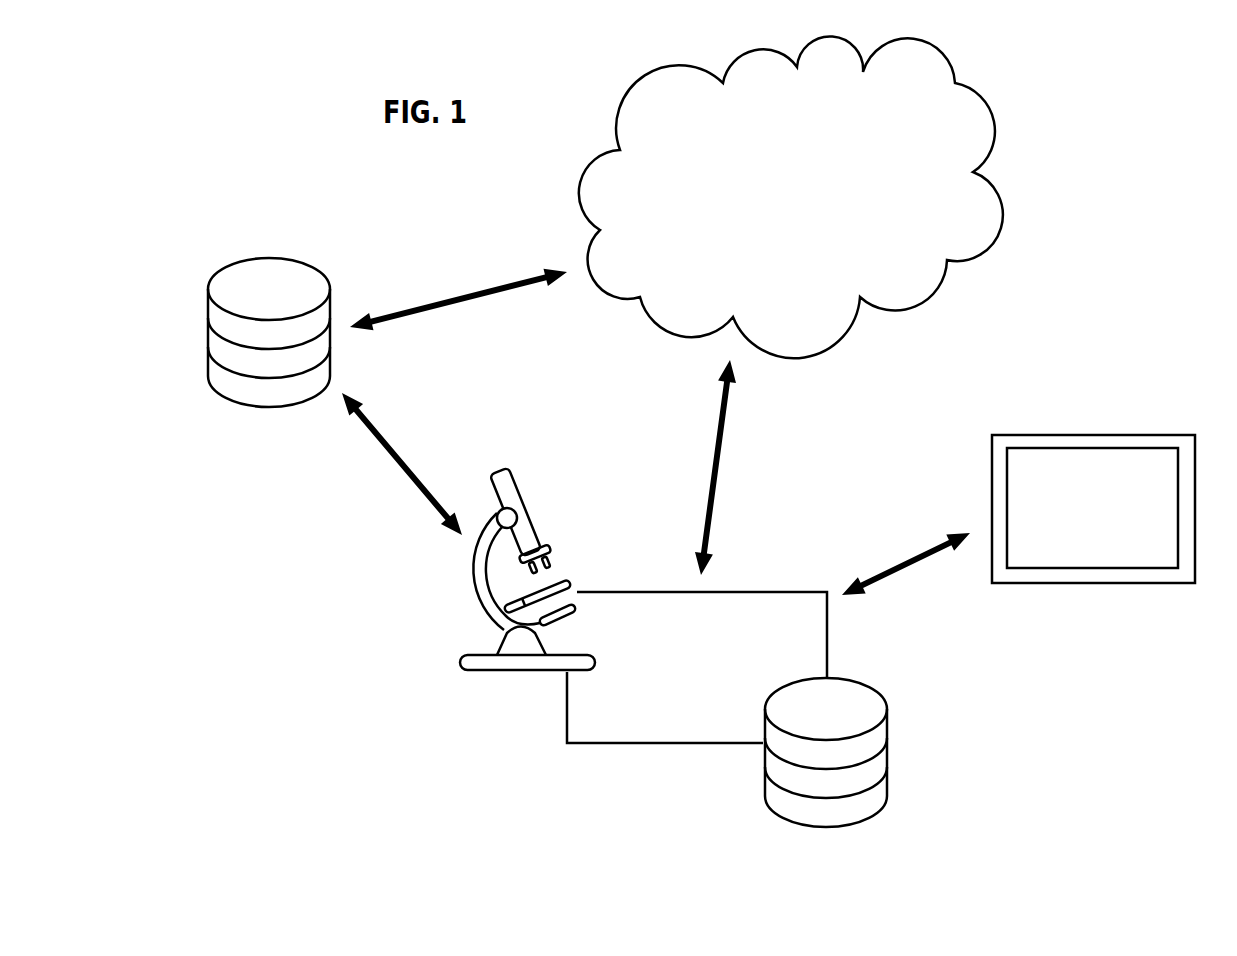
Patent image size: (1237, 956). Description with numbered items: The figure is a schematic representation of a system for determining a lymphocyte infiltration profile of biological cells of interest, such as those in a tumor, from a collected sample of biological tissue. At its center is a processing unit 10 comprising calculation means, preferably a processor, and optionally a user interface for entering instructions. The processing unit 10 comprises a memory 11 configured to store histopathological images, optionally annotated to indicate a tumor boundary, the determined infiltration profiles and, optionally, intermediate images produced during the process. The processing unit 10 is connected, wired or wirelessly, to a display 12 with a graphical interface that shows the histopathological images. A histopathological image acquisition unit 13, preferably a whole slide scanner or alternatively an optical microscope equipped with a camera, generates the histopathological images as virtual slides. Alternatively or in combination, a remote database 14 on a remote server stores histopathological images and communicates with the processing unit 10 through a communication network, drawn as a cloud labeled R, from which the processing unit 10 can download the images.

The processing unit 10 is at (710, 676).
The memory 11 is at (839, 721).
The display 12 is at (1106, 517).
The histopathological image acquisition unit 13 is at (466, 598).
The remote database 14 is at (281, 301).
The network R is at (784, 142).